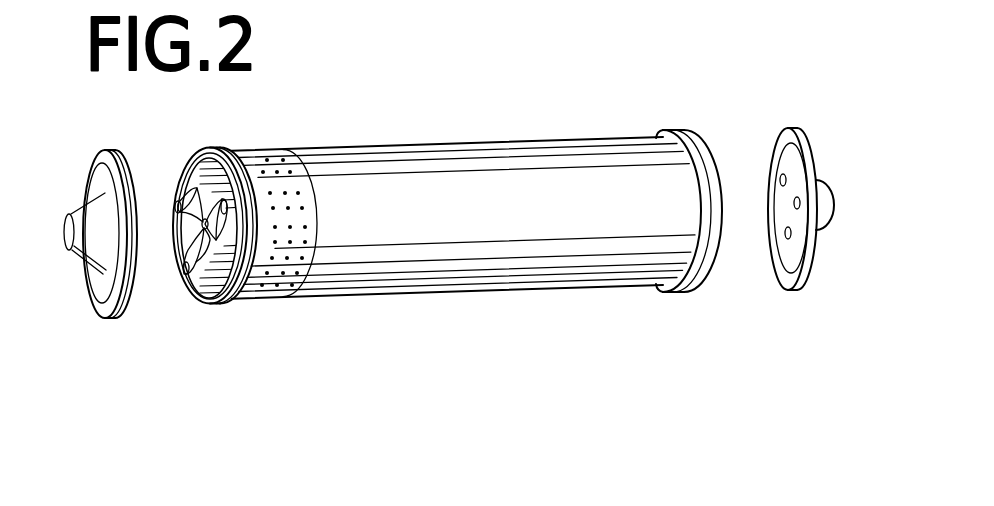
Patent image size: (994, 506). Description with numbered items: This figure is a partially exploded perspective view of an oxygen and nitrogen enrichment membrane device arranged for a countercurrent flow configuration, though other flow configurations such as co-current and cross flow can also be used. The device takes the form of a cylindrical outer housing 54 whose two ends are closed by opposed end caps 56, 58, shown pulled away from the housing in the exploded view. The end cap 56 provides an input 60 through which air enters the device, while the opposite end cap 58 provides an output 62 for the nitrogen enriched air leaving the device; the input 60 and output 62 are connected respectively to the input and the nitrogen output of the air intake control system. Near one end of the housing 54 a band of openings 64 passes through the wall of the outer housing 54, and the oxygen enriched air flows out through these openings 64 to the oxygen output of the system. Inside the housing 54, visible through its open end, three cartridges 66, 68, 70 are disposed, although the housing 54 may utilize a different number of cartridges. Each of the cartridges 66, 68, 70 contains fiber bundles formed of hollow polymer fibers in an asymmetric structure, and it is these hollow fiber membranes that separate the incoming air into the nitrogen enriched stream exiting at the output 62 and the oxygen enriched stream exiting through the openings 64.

The cylindrical outer housing 54 is at (438, 295).
The end cap 56 is at (100, 152).
The end cap 58 is at (803, 142).
The input 60 is at (65, 225).
The output 62 is at (828, 213).
The openings 64 is at (292, 252).
The cartridge 66 is at (188, 200).
The cartridge 68 is at (228, 245).
The cartridge 70 is at (203, 273).